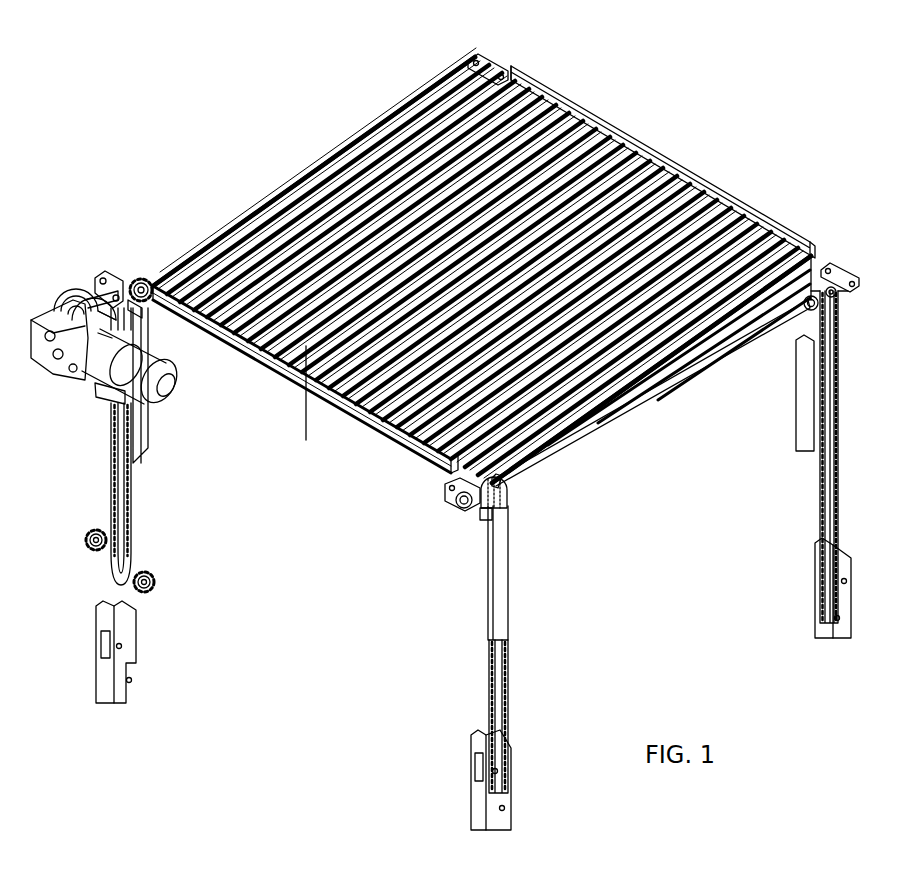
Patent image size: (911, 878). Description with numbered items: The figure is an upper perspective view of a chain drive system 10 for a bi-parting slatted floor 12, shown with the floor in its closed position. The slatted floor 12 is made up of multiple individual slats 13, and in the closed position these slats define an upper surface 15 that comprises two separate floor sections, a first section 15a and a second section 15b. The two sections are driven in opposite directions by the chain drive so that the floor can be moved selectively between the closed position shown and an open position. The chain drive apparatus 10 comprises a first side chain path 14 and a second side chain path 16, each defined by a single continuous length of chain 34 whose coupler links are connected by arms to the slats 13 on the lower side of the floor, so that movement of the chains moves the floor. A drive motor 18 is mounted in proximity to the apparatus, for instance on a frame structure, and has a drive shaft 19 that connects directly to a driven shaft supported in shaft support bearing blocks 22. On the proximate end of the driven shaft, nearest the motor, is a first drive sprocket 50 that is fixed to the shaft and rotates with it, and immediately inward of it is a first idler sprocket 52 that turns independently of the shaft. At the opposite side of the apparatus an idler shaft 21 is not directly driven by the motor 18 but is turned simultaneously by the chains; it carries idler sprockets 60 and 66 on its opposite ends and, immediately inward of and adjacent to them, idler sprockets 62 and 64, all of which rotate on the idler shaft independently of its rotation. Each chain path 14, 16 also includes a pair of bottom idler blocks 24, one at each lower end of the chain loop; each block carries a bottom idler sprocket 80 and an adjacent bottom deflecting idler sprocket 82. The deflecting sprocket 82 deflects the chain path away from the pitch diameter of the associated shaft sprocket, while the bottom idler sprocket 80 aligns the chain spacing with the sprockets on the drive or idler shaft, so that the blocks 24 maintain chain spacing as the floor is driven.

The chain drive system 10 is at (66, 414).
The slatted floor 12 is at (365, 93).
The slats 13 is at (528, 92).
The first side chain path 14 is at (463, 659).
The upper surface 15 is at (585, 297).
The first section 15a is at (595, 381).
The second section 15b is at (283, 166).
The second side chain path 16 is at (788, 495).
The drive motor 18 is at (155, 382).
The drive shaft 19 is at (84, 296).
The idler shaft 21 is at (553, 443).
The shaft support bearing blocks 22 is at (97, 262).
The bottom idler blocks 24 is at (121, 673).
The chain 34 is at (128, 551).
The first drive sprocket 50 is at (131, 266).
The first idler sprocket 52 is at (142, 292).
The idler sprocket 60 is at (473, 505).
The idler sprocket 62 is at (503, 477).
The idler sprocket 64 is at (797, 303).
The idler sprocket 66 is at (825, 289).
The bottom idler sprocket 80 is at (142, 584).
The bottom deflecting idler sprocket 82 is at (77, 532).